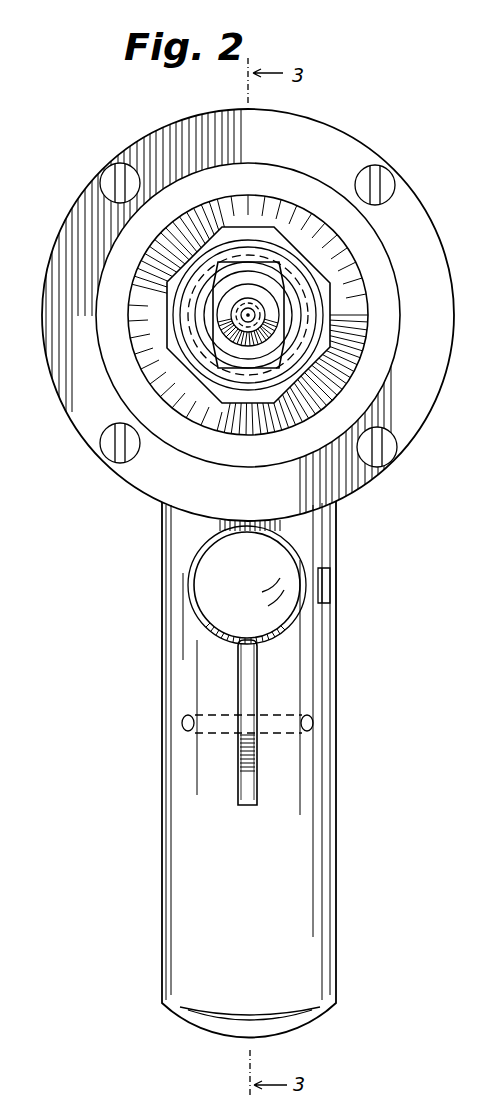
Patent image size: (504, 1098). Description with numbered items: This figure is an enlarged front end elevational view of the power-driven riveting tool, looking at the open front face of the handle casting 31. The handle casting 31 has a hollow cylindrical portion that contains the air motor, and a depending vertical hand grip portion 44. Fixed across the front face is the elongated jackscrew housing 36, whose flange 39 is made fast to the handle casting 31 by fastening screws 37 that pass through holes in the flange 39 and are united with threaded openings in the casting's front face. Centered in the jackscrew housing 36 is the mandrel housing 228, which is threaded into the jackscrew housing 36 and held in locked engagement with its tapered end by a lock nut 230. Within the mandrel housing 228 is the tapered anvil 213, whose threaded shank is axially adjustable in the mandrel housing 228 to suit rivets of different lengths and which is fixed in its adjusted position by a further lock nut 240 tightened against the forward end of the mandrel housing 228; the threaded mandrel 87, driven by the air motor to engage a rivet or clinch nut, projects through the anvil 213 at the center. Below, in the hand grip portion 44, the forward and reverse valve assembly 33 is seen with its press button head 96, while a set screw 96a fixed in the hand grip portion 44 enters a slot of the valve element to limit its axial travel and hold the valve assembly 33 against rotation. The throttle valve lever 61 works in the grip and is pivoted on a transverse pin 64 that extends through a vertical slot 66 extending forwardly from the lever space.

The handle casting 31 is at (347, 765).
The forward and reverse valve assembly 33 is at (266, 569).
The jackscrew housing 36 is at (387, 225).
The fastening screws 37 is at (108, 176).
The flange 39 is at (430, 247).
The hand grip portion 44 is at (300, 858).
The throttle valve lever 61 is at (248, 667).
The pin 64 is at (183, 724).
The vertical slot 66 is at (257, 778).
The threaded mandrel 87 is at (232, 315).
The press button head 96 is at (210, 578).
The set screw 96a is at (330, 572).
The anvil 213 is at (225, 326).
The mandrel housing 228 is at (247, 277).
The lock nut 230 is at (323, 273).
The lock nut 240 is at (195, 313).